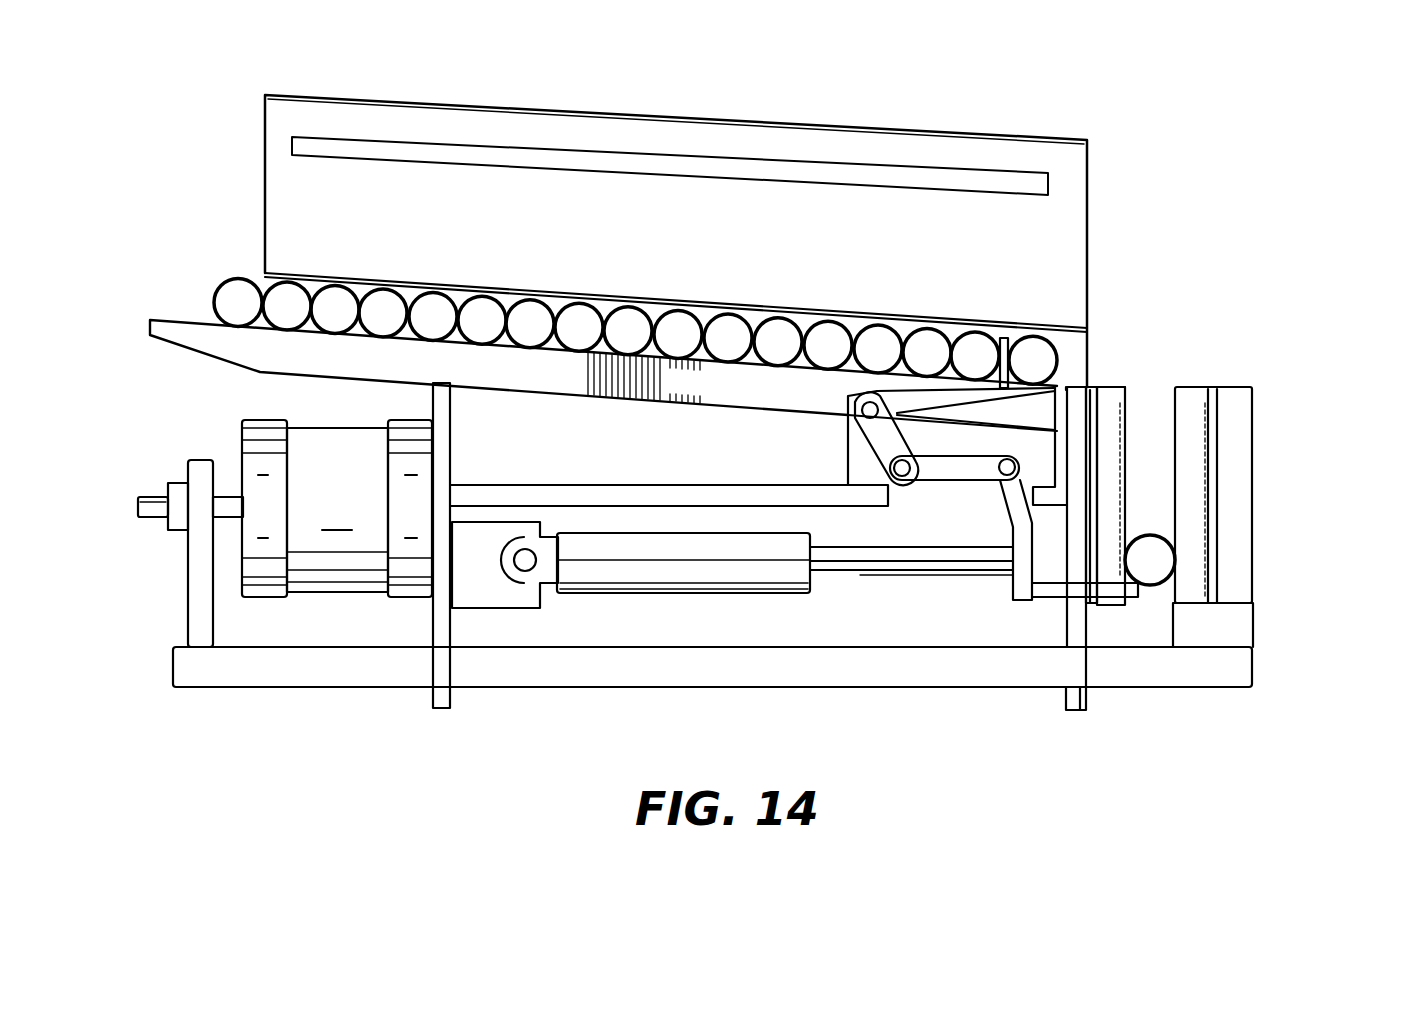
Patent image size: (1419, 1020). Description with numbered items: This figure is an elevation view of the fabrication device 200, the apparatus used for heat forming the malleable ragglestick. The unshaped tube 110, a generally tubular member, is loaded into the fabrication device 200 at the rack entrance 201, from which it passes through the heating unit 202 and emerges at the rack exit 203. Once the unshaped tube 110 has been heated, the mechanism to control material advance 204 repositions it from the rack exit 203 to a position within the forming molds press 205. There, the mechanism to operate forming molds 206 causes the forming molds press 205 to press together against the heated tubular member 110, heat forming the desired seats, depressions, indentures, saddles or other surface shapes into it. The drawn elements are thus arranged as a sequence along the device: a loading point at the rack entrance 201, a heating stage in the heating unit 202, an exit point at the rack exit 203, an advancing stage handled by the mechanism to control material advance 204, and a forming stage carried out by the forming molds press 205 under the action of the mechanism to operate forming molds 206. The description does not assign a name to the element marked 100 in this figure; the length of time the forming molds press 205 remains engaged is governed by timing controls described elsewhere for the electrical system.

The ball 100 is at (1143, 587).
The unshaped tube 110 is at (213, 307).
The fabrication device 200 is at (1298, 153).
The rack entrance 201 is at (262, 278).
The heating unit 202 is at (603, 113).
The rack exit 203 is at (1087, 347).
The mechanism to control material advance 204 is at (1015, 600).
The forming molds press 205 is at (1123, 388).
The mechanism to operate forming molds 206 is at (327, 687).